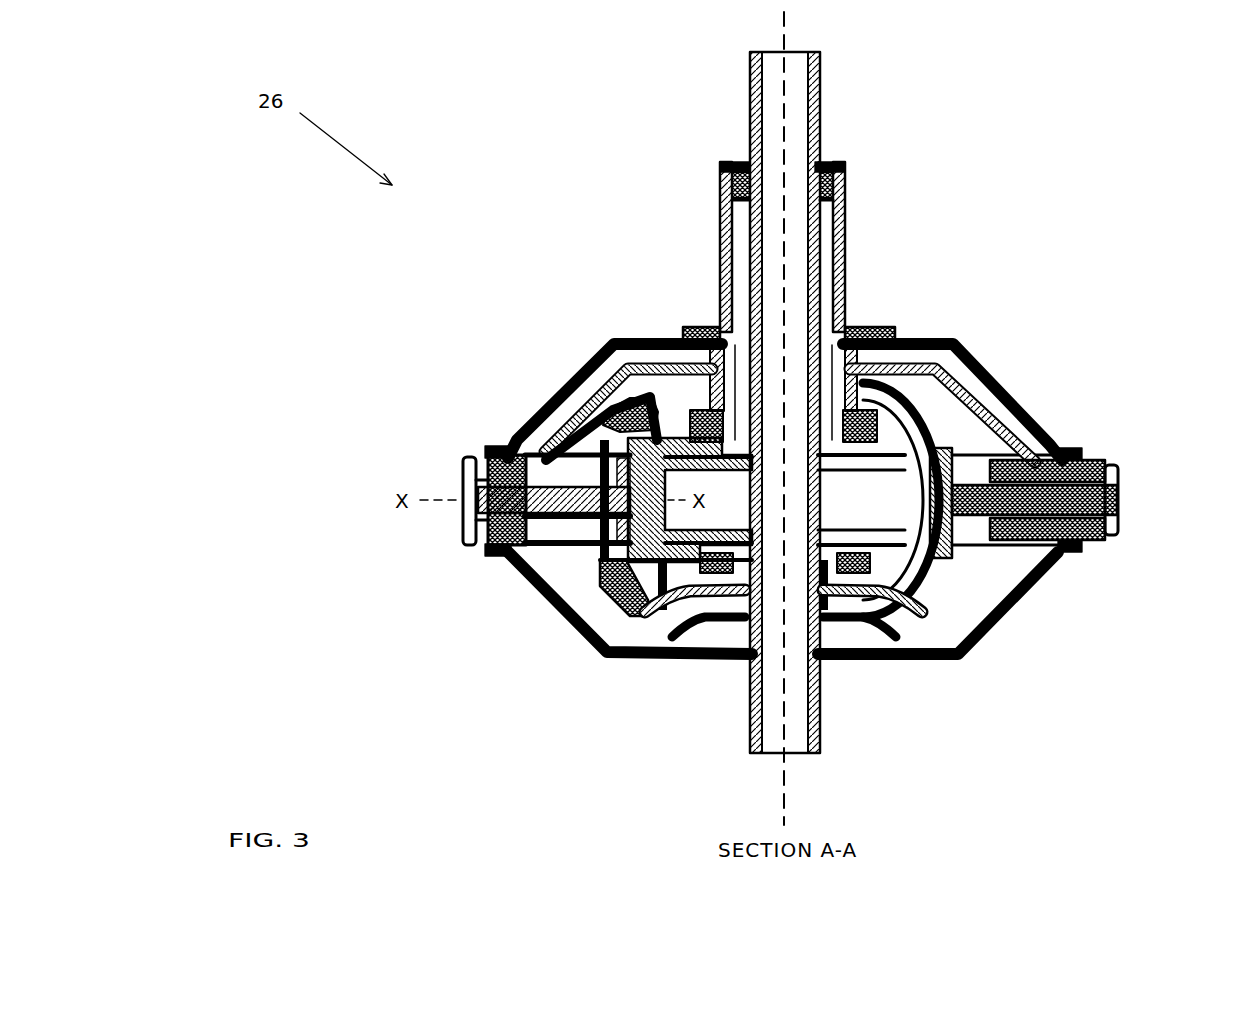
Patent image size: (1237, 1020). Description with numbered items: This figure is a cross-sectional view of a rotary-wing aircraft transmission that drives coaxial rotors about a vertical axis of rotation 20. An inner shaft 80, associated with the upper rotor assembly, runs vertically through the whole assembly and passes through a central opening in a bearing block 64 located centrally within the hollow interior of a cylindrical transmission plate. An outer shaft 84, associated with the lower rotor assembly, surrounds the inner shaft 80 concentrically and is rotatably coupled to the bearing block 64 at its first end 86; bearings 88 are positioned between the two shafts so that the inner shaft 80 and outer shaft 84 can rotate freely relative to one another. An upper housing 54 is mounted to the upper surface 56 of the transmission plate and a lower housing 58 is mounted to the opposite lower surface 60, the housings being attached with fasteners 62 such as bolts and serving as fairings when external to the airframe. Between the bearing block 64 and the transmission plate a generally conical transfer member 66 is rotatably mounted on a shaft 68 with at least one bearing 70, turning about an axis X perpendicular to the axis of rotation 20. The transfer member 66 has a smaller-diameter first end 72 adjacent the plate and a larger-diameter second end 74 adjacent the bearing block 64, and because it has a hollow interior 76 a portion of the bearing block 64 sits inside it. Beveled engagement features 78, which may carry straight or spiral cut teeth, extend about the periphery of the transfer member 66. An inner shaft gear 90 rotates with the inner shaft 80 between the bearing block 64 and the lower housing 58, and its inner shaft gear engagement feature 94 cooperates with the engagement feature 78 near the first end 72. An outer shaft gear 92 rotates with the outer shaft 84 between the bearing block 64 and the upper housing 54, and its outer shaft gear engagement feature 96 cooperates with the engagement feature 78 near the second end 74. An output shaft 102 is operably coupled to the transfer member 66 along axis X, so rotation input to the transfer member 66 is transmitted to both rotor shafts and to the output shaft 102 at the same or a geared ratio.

The axis of rotation 20 is at (785, 18).
The upper housing 54 is at (1000, 400).
The upper surface 56 is at (1100, 470).
The lower housing 58 is at (1005, 600).
The lower surface 60 is at (1110, 525).
The fasteners 62 is at (1072, 450).
The bearing block 64 is at (680, 438).
The transfer member 66 is at (585, 568).
The shaft 68 is at (541, 445).
The bearing 70 is at (462, 465).
The first end 72 is at (497, 548).
The second end 74 is at (636, 362).
The hollow interior 76 is at (668, 670).
The engagement feature 78 is at (512, 437).
The inner shaft 80 is at (822, 100).
The outer shaft 84 is at (845, 245).
The first end 86 is at (903, 398).
The bearings 88 is at (845, 176).
The inner shaft gear 90 is at (862, 640).
The outer shaft gear 92 is at (597, 340).
The inner shaft gear engagement feature 94 is at (912, 640).
The outer shaft gear engagement feature 96 is at (540, 425).
The output shaft 102 is at (950, 565).